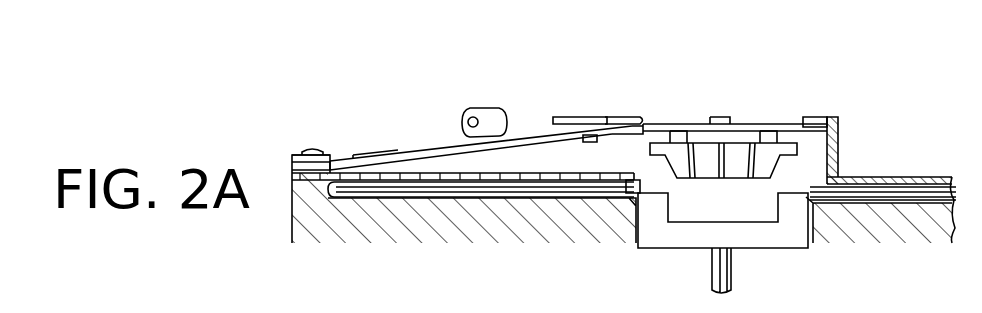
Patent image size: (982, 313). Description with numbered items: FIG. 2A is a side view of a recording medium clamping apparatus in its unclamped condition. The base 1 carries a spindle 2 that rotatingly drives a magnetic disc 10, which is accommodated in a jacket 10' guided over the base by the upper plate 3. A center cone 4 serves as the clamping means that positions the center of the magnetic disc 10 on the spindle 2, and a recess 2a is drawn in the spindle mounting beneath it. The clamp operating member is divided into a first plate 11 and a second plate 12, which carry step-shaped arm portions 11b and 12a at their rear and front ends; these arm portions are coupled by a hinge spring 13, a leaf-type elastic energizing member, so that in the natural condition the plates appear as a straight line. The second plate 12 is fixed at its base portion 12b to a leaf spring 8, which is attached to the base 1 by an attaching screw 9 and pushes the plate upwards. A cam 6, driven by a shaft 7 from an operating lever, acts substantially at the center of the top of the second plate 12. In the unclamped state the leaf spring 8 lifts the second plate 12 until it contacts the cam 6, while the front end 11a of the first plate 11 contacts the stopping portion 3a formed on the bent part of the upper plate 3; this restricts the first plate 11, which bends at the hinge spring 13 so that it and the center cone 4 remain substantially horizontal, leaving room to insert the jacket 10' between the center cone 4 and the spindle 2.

The base 1 is at (480, 222).
The spindle 2 is at (788, 245).
The recess of support block 2a is at (684, 215).
The upper plate 3 is at (887, 176).
The stopping portion 3a is at (832, 117).
The center cone 4 is at (743, 158).
The cam 6 is at (492, 122).
The shaft 7 is at (467, 118).
The leaf spring 8 is at (342, 160).
The attaching screw 9 is at (303, 150).
The magnetic disc 10 is at (642, 232).
The jacket 10' is at (628, 164).
The first plate 11 is at (690, 123).
The front end 11a is at (810, 124).
The arm portion 11b is at (575, 117).
The second plate 12 is at (528, 133).
The arm portion 12a is at (632, 118).
The base portion 12b is at (368, 153).
The hinge spring 13 is at (610, 124).